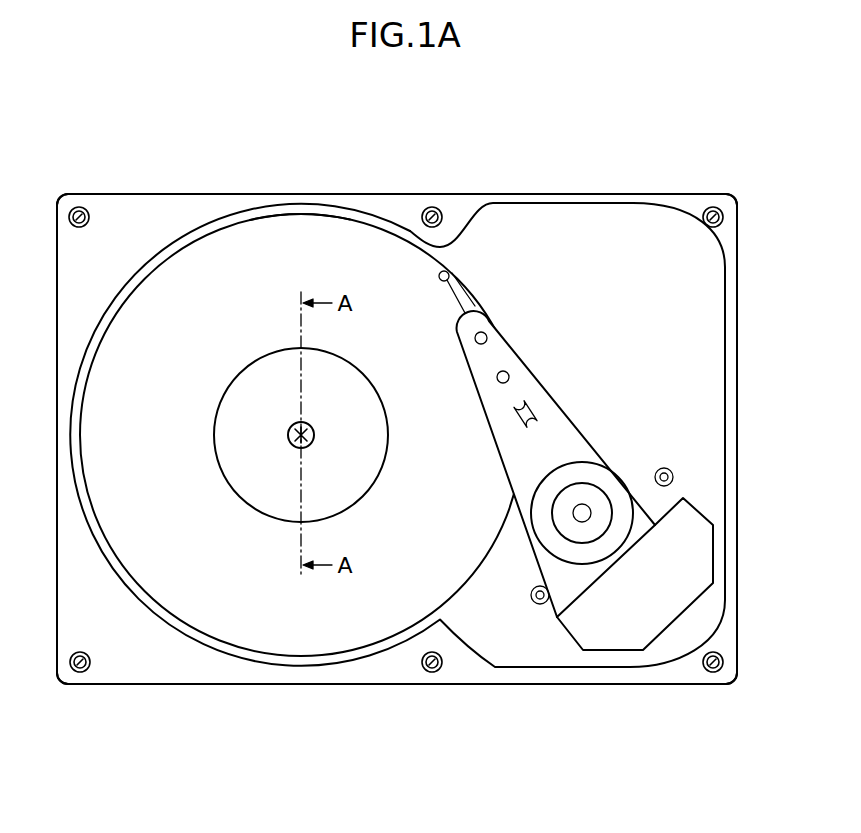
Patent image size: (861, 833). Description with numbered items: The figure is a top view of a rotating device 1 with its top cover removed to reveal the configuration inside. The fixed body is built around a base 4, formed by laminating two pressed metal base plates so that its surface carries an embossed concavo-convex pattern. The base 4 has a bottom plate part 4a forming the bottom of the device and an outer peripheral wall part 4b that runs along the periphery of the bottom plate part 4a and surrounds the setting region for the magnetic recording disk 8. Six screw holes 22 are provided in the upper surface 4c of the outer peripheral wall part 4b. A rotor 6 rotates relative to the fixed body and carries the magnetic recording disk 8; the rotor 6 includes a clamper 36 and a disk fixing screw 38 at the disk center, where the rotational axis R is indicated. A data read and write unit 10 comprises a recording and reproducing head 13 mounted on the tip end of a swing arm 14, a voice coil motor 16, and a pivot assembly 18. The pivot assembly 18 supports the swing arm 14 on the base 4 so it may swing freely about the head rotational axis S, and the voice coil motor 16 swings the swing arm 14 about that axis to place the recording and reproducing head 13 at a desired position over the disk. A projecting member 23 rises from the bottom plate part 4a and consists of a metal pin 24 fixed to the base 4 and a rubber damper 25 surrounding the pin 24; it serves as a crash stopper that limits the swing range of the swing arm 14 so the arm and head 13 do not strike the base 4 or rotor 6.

The rotating device 1 is at (378, 805).
The base 4 is at (738, 280).
The bottom plate part 4a is at (528, 238).
The outer peripheral wall part 4b is at (153, 218).
The upper surface 4c is at (64, 268).
The rotor 6 is at (284, 500).
The magnetic recording disk 8 is at (303, 253).
The data read and write unit 10 is at (636, 503).
The recording and reproducing head 13 is at (450, 275).
The swing arm 14 is at (550, 398).
The voice coil motor 16 is at (690, 523).
The pivot assembly 18 is at (590, 475).
The screw holes 22 is at (78, 207).
The projecting member 23 is at (633, 621).
The pin 24 is at (540, 604).
The damper 25 is at (533, 602).
The clamper 36 is at (258, 437).
The disk fixing screw 38 is at (314, 434).
The rotation center R is at (291, 444).
The head rotational axis S is at (582, 522).